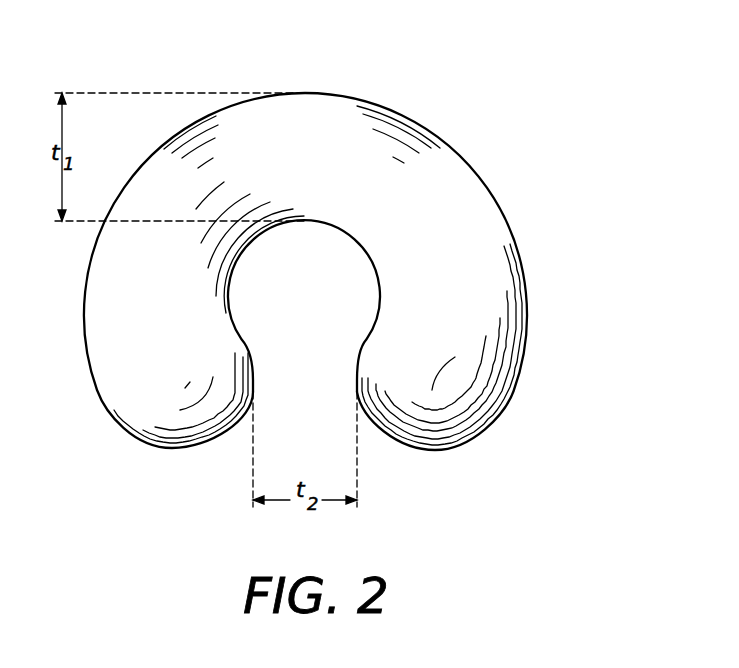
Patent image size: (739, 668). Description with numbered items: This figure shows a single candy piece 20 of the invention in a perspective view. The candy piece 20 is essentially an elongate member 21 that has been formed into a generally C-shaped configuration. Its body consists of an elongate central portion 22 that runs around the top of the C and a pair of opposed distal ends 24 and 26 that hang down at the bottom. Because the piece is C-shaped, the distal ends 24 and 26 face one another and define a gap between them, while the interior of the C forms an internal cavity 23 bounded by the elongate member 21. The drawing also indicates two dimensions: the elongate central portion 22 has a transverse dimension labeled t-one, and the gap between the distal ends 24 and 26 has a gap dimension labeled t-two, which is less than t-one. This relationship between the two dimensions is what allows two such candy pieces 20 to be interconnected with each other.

The candy piece 20 is at (481, 142).
The elongate member 21 is at (356, 110).
The elongate central portion 22 is at (283, 133).
The internal cavity 23 is at (343, 297).
The distal end 24 is at (418, 430).
The distal end 26 is at (185, 435).